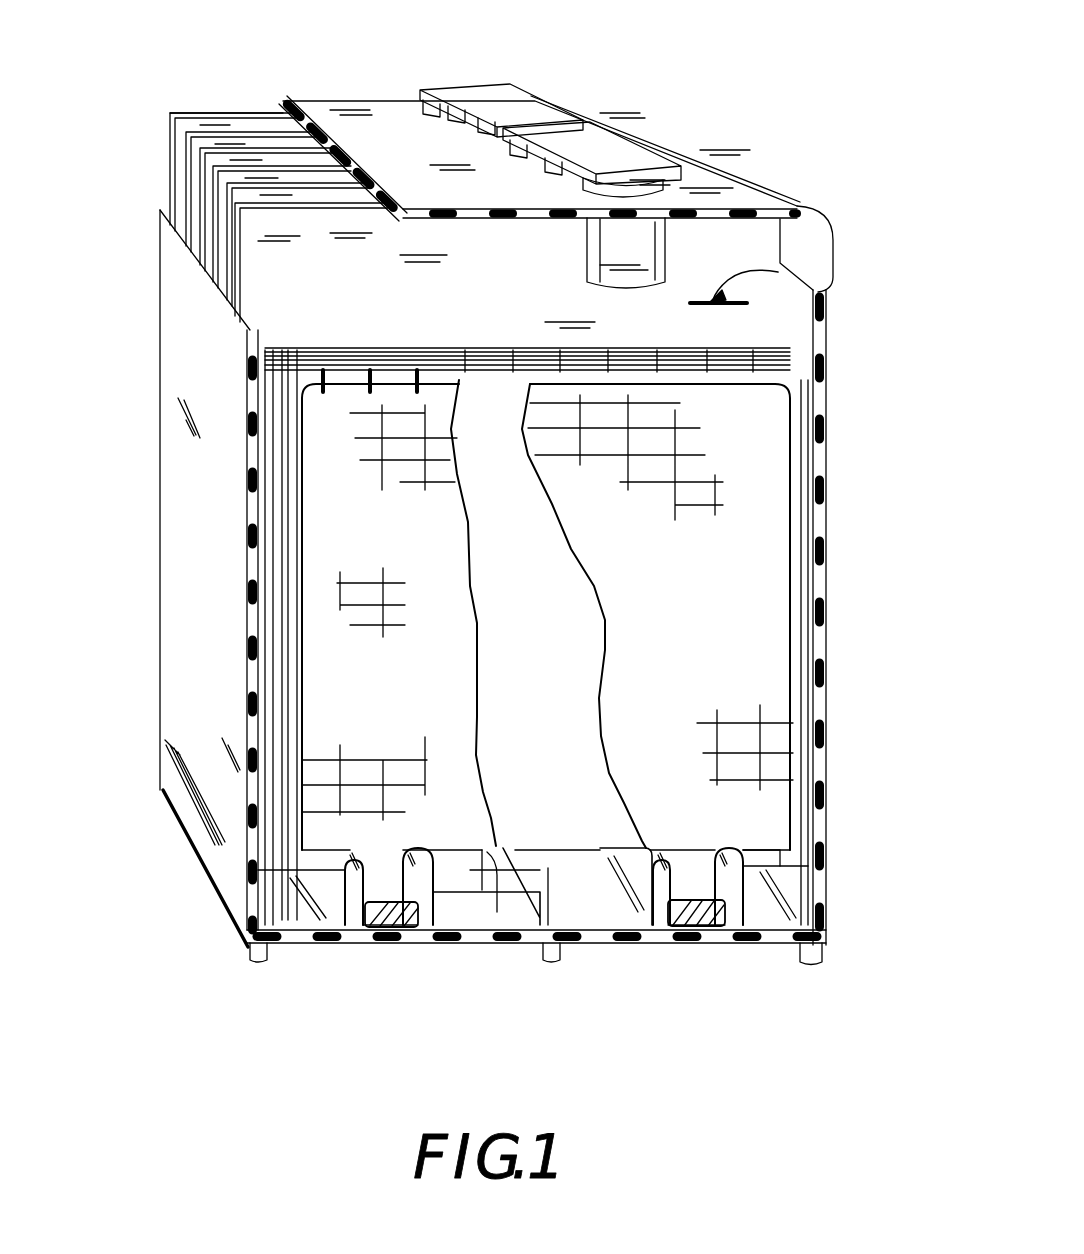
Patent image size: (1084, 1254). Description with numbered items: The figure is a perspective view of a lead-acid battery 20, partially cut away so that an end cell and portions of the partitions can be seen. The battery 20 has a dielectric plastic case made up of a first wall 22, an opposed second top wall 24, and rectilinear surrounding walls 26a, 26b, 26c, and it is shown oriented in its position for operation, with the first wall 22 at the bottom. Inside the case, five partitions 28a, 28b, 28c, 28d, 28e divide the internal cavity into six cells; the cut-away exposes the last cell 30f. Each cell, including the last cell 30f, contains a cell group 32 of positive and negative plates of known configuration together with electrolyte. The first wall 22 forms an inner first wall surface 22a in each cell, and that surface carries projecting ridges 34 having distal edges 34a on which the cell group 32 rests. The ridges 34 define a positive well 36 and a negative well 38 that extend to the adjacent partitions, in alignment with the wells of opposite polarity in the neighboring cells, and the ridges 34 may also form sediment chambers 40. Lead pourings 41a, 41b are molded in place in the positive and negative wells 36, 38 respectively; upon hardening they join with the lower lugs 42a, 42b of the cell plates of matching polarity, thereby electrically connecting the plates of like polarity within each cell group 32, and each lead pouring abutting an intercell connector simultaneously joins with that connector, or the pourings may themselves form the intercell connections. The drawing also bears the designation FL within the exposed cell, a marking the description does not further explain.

The battery 20 is at (150, 675).
The first wall 22 is at (303, 947).
The inner first wall surface 22a is at (477, 908).
The second top wall 24 is at (833, 230).
The surrounding wall 26a is at (193, 557).
The surrounding wall 26b is at (823, 518).
The surrounding wall 26c is at (210, 110).
The partition 28a is at (180, 142).
The partition 28b is at (193, 176).
The partition 28c is at (162, 210).
The partition 28d is at (222, 233).
The partition 28e is at (233, 264).
The last cell 30f is at (293, 310).
The cell group 32 is at (765, 440).
The ridge 34 is at (350, 870).
The distal edge 34a is at (440, 845).
The positive well 36 is at (427, 1000).
The negative well 38 is at (763, 979).
The sediment chamber 40 is at (290, 907).
The lead pouring 41a is at (400, 913).
The lead pouring 41b is at (697, 865).
The lower lug 42a is at (383, 915).
The lower lug 42b is at (692, 915).
The fluid level FL is at (778, 272).